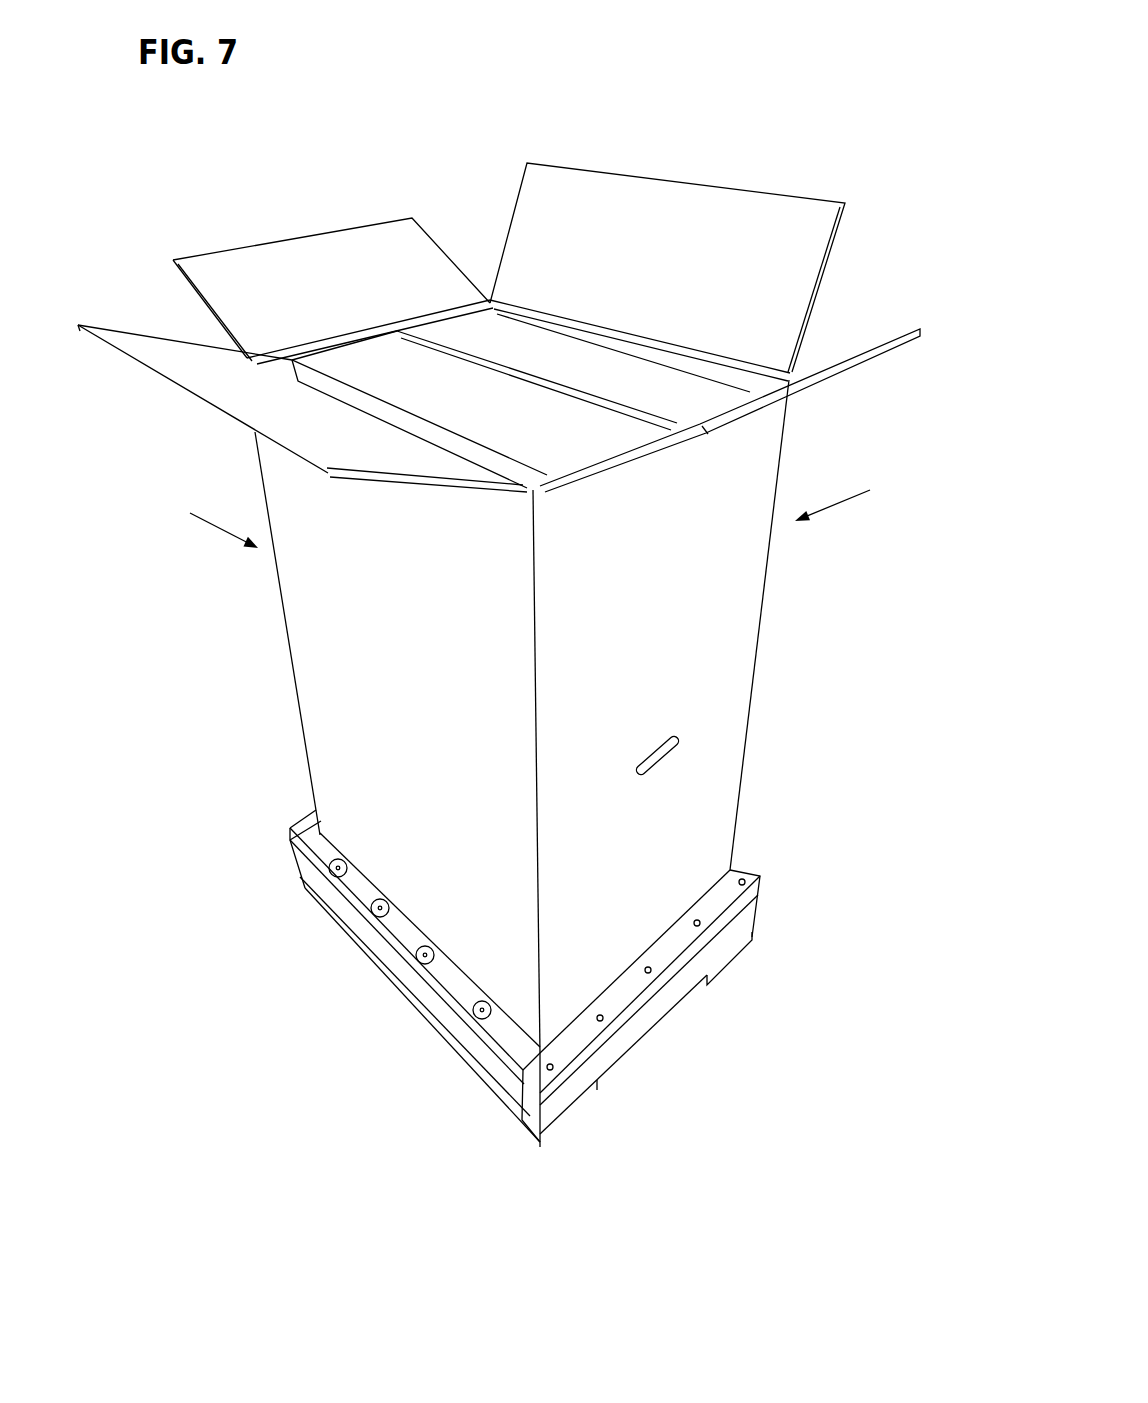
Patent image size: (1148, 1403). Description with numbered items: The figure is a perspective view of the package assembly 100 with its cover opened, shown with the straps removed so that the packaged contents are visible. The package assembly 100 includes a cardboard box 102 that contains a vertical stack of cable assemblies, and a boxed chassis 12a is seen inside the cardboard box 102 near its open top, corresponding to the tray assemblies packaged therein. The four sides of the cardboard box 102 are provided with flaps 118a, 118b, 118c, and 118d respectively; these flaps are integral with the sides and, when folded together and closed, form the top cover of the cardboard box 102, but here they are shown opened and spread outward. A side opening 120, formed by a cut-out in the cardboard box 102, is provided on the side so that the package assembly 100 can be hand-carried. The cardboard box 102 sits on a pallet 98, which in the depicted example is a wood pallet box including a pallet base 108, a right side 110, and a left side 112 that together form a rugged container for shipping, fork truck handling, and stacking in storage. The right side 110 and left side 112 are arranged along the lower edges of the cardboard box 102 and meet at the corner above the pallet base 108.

The package assembly 100 is at (720, 121).
The cardboard box 102 is at (799, 633).
The boxed chassis 12a is at (536, 424).
The flap 118a is at (185, 371).
The flap 118b is at (802, 210).
The flap 118c is at (856, 367).
The flap 118d is at (217, 252).
The side opening 120 is at (673, 742).
The pallet 98 is at (791, 879).
The pallet base 108 is at (540, 1143).
The right side 110 is at (607, 1050).
The left side 112 is at (303, 868).